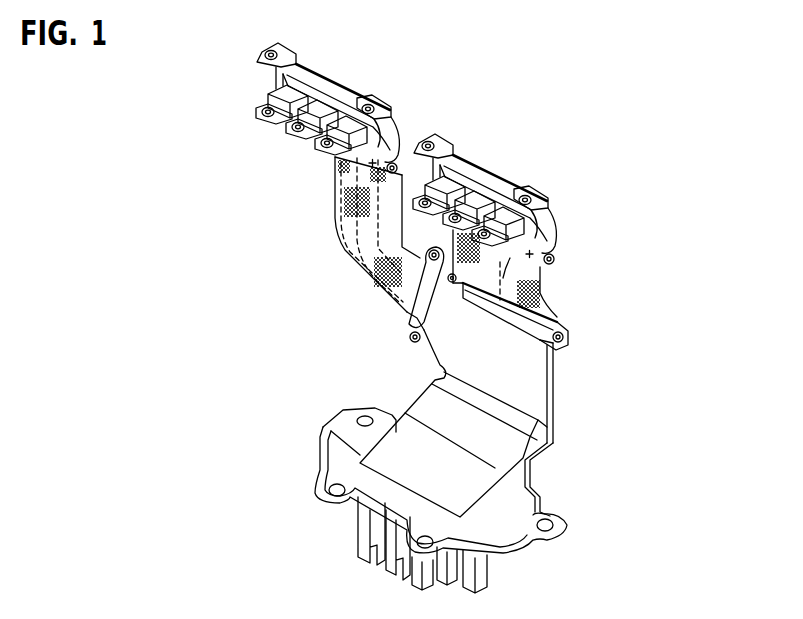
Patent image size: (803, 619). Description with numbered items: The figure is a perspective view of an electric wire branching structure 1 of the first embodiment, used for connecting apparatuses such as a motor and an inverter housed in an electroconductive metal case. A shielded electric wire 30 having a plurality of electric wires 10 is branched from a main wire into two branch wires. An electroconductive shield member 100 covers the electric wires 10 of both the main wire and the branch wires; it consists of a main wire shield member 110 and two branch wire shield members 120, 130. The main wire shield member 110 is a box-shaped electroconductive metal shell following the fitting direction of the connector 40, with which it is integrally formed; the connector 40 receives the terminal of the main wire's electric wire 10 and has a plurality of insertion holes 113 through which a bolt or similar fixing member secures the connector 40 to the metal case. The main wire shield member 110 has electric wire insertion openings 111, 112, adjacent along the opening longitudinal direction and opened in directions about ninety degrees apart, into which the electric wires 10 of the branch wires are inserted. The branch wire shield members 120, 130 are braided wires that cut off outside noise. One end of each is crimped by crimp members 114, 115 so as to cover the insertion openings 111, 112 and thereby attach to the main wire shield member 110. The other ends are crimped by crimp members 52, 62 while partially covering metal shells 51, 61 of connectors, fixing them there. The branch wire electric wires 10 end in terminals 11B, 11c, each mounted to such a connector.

The electric wire branching structure 1 is at (170, 121).
The electric wire 10 is at (335, 214).
The terminal 11B is at (262, 106).
The terminal 11c is at (497, 206).
The shielded electric wire 30 is at (294, 303).
The connector 40 is at (346, 528).
The metal shell 51 is at (333, 88).
The crimp member 52 is at (397, 150).
The metal shell 61 is at (490, 168).
The crimp member 62 is at (560, 256).
The shield member 100 is at (652, 310).
The main wire shield member 110 is at (538, 381).
The electric wire insertion opening 111 is at (405, 302).
The electric wire insertion opening 112 is at (566, 319).
The insertion hole 113 is at (560, 520).
The crimp member 114 is at (401, 328).
The crimp member 115 is at (572, 347).
The branch wire shield member 120 is at (338, 258).
The branch wire shield member 130 is at (546, 289).